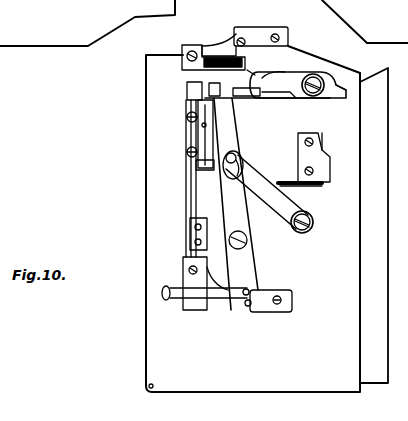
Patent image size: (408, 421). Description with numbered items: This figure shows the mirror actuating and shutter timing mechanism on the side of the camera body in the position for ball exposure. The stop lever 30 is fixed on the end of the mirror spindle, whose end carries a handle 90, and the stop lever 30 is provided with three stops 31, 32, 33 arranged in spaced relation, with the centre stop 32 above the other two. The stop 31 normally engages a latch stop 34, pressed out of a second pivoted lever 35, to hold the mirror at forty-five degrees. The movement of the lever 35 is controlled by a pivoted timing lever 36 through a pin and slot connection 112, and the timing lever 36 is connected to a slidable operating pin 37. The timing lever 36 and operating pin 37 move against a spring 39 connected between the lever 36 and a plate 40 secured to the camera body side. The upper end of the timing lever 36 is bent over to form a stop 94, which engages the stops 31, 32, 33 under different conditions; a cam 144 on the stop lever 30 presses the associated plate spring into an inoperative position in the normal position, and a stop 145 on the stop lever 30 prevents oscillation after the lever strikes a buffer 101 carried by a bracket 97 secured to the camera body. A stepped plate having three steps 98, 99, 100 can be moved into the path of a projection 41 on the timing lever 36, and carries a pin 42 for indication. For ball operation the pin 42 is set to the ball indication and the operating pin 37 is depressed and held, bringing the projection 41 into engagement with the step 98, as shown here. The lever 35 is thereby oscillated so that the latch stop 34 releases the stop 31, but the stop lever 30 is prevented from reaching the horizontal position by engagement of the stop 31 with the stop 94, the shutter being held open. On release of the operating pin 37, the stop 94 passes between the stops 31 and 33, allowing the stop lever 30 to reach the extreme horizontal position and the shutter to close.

The stop lever 30 is at (298, 85).
The stop 31 is at (202, 89).
The stop 32 is at (256, 64).
The stop 33 is at (290, 69).
The latch stop 34 is at (240, 176).
The second pivoted lever 35 is at (250, 182).
The timing lever 36 is at (232, 141).
The operating pin 37 is at (208, 296).
The spring 39 is at (307, 186).
The plate 40 is at (318, 157).
The projection 41 is at (184, 178).
The pin 42 is at (200, 125).
The handle 90 is at (346, 96).
The stop 94 is at (208, 78).
The bracket 97 is at (257, 31).
The step 98 is at (196, 167).
The step 99 is at (208, 162).
The step 100 is at (200, 140).
The buffer 101 is at (213, 53).
The pin and slot connection 112 is at (222, 168).
The cam 144 is at (276, 100).
The stop 145 is at (246, 97).